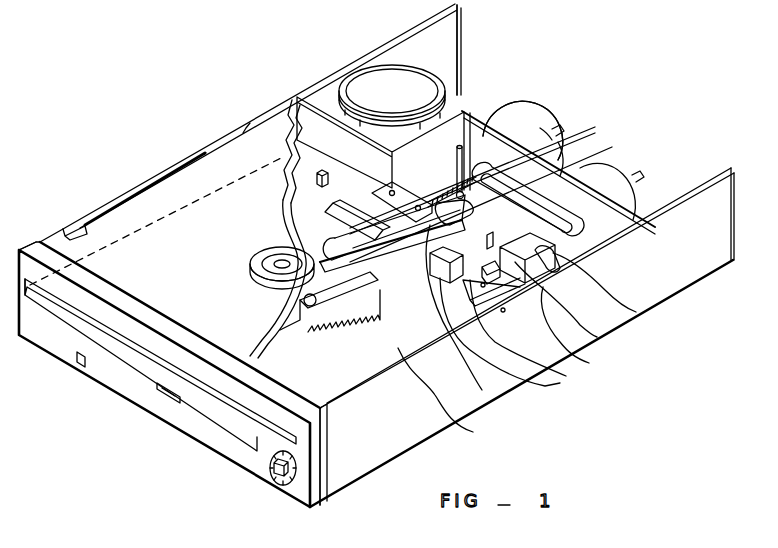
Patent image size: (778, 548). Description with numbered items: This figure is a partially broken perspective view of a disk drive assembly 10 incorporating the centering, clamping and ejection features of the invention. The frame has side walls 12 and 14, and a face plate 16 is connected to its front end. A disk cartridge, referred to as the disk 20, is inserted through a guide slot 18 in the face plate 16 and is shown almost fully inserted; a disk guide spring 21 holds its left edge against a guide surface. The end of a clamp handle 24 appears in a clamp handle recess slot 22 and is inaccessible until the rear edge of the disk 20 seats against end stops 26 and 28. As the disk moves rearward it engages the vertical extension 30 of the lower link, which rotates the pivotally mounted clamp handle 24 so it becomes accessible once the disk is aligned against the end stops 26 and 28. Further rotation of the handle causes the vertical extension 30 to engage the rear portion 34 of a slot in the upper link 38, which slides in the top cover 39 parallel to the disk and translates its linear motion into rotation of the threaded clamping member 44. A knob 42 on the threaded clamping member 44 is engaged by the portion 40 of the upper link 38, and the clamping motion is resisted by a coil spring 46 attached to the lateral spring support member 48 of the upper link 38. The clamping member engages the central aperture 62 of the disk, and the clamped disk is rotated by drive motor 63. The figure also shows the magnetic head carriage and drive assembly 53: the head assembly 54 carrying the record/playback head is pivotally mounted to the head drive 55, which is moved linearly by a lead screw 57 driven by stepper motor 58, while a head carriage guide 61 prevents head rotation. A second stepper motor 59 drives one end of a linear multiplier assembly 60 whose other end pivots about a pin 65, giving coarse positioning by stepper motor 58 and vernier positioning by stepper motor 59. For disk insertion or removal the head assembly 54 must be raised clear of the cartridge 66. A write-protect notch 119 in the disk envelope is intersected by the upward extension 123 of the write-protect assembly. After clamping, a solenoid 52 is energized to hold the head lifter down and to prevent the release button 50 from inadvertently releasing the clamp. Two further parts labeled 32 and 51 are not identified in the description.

The disk drive assembly 10 is at (183, 95).
The side wall 12 is at (113, 200).
The side wall 14 is at (482, 390).
The face plate 16 is at (90, 382).
The guide slot 18 is at (131, 441).
The disk cartridge 20 is at (132, 392).
The disk guide spring 21 is at (589, 363).
The clamp handle recess slot 22 is at (247, 453).
The clamp handle 24 is at (166, 403).
The end stop 26 is at (297, 97).
The end stop 28 is at (597, 337).
The vertical extension 30 is at (597, 251).
The transverse bar 32 is at (512, 98).
The rear portion of slot 34 is at (598, 152).
The upper link 38 is at (397, 252).
The top cover 39 is at (170, 170).
The portion of link 40 is at (315, 312).
The knob 42 is at (302, 322).
The threaded clamping member 44 is at (318, 241).
The coil spring 46 is at (362, 315).
The lateral spring support member 48 is at (376, 282).
The release button 50 is at (273, 478).
The carriage 51 is at (378, 275).
The solenoid 52 is at (636, 312).
The magnetic head carriage and drive assembly 53 is at (597, 99).
The head assembly 54 is at (348, 220).
The head drive 55 is at (411, 203).
The lead screw 57 is at (443, 200).
The stepper motor 58 is at (522, 118).
The second stepper motor 59 is at (634, 167).
The linear multiplier assembly 60 is at (566, 140).
The head carriage guide 61 is at (549, 131).
The central aperture 62 is at (273, 300).
The drive motor 63 is at (494, 49).
The pin 65 is at (470, 160).
The cartridge 66 is at (473, 432).
The write-protect notch 119 is at (566, 376).
The upward extension 123 is at (545, 386).